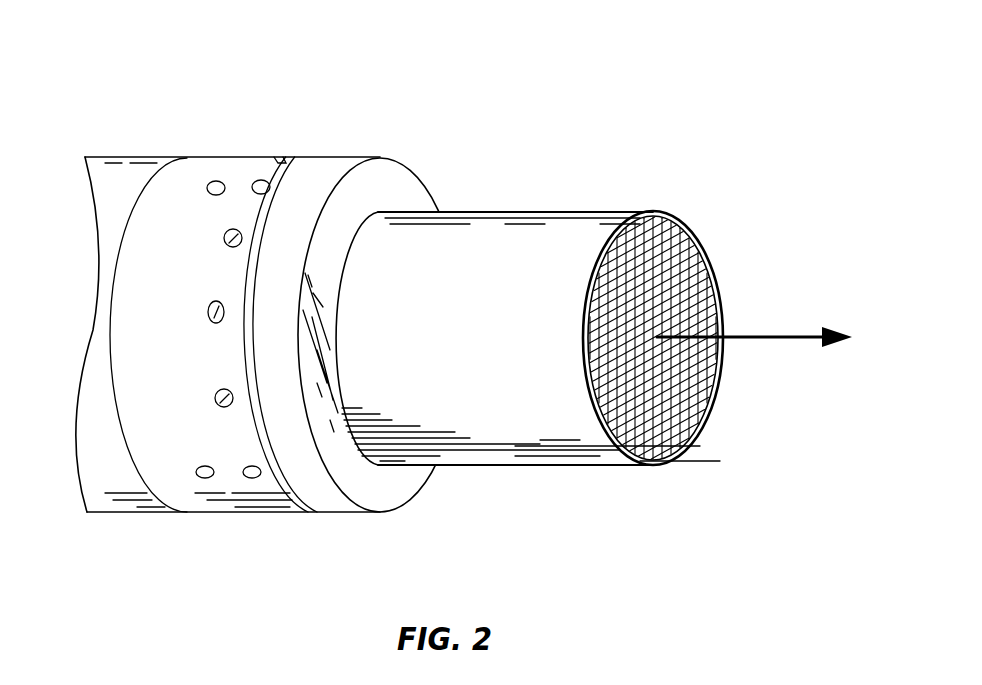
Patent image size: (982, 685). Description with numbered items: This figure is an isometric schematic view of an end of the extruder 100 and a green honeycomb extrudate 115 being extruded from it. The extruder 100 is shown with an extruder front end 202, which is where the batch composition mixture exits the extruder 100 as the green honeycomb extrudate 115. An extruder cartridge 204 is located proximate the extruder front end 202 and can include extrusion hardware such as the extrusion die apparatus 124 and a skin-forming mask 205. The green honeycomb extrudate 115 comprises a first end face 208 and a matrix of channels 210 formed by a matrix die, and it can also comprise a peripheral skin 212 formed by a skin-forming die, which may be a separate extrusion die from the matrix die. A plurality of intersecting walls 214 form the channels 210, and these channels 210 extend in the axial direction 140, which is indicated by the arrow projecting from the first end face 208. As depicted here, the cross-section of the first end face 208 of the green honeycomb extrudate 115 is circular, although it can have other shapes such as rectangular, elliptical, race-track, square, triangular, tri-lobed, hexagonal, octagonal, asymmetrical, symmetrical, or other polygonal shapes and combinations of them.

The extruder 100 is at (246, 68).
The extruder cartridge 204 is at (234, 148).
The extrusion die apparatus 124 is at (278, 522).
The extruder front end 202 is at (448, 168).
The skin-forming mask 205 is at (383, 490).
The green honeycomb extrudate 115 is at (481, 478).
The peripheral skin 212 is at (543, 468).
The first end face 208 is at (718, 262).
The intersecting walls 214 is at (722, 365).
The matrix of channels 210 is at (720, 417).
The axial direction 140 is at (805, 333).